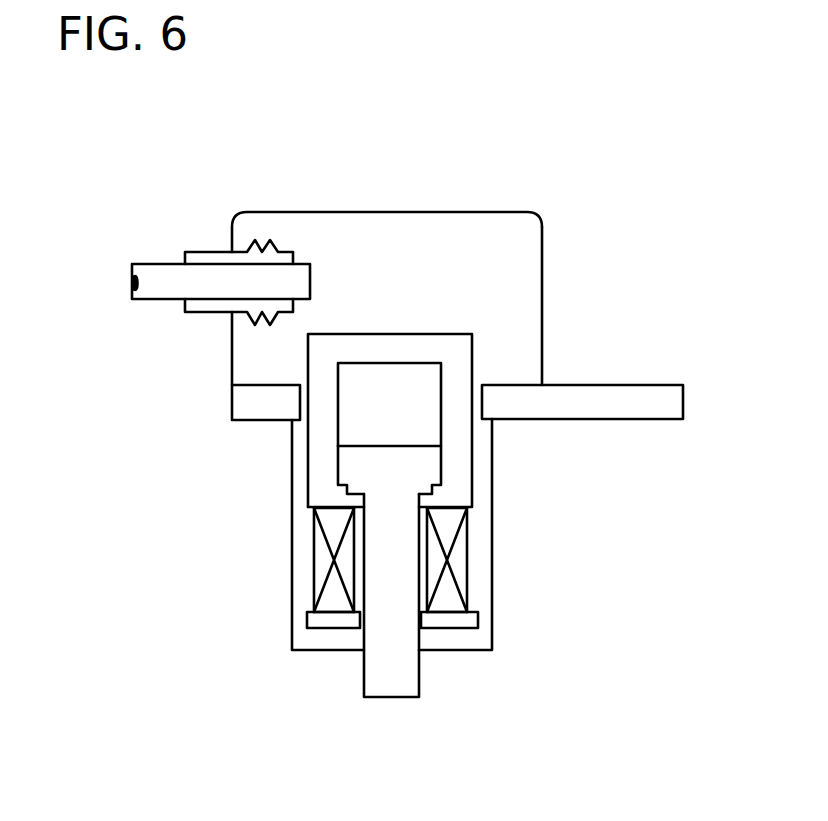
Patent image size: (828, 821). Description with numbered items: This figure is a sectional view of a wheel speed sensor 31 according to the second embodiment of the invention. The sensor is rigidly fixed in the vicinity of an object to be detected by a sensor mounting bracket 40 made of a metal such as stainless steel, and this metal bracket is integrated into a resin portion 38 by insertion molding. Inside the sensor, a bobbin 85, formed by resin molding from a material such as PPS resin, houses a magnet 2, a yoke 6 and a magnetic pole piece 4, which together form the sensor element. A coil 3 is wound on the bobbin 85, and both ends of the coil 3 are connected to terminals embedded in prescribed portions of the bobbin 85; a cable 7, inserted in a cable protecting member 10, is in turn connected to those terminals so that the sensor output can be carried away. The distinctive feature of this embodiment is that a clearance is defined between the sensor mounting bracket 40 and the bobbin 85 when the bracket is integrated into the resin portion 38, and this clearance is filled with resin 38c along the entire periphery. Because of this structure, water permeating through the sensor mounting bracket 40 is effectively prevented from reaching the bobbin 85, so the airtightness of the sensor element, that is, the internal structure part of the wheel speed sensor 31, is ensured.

The magnet 2 is at (363, 467).
The coil 3 is at (332, 592).
The magnetic pole piece 4 is at (392, 680).
The yoke 6 is at (363, 420).
The cable 7 is at (162, 283).
The cable protecting member 10 is at (197, 248).
The wheel speed sensor 31 is at (558, 202).
The resin portion 38 is at (255, 357).
The resin 38c is at (477, 390).
The sensor mounting bracket 40 is at (262, 410).
The bobbin 85 is at (452, 475).